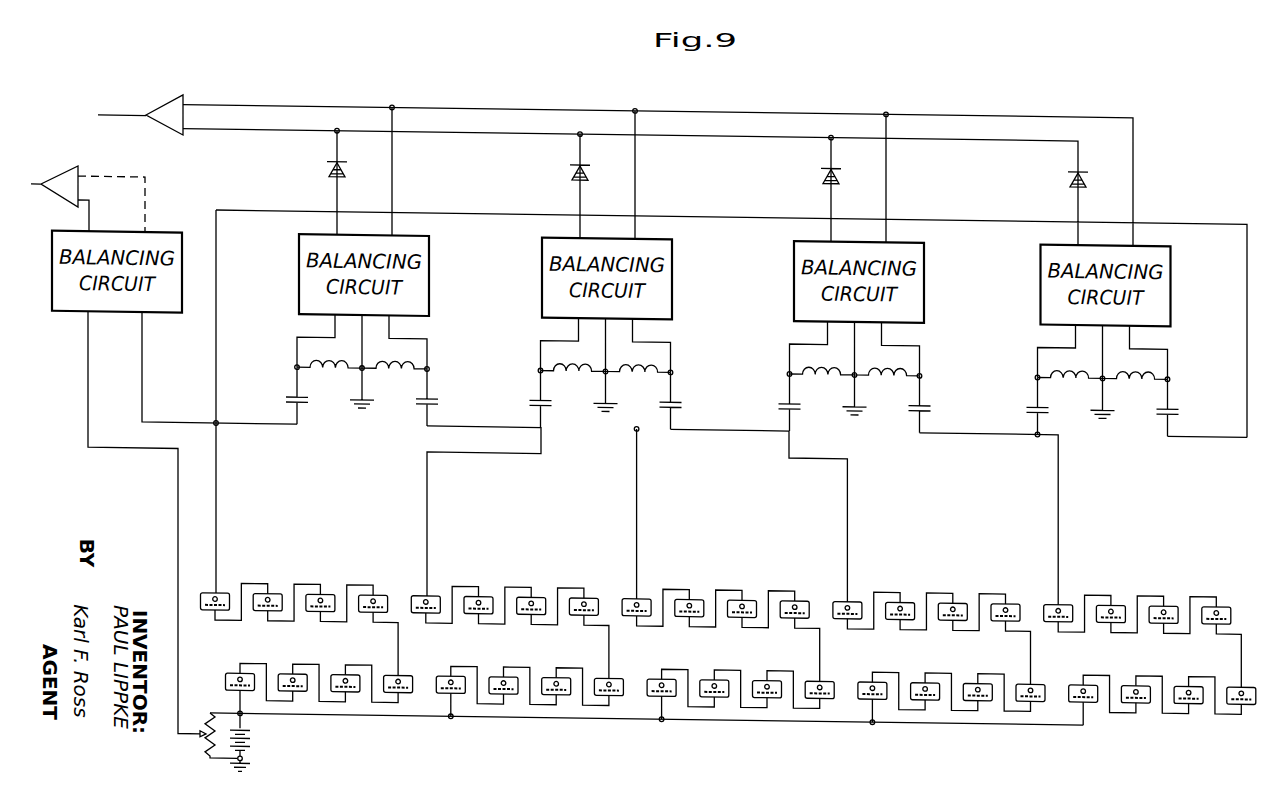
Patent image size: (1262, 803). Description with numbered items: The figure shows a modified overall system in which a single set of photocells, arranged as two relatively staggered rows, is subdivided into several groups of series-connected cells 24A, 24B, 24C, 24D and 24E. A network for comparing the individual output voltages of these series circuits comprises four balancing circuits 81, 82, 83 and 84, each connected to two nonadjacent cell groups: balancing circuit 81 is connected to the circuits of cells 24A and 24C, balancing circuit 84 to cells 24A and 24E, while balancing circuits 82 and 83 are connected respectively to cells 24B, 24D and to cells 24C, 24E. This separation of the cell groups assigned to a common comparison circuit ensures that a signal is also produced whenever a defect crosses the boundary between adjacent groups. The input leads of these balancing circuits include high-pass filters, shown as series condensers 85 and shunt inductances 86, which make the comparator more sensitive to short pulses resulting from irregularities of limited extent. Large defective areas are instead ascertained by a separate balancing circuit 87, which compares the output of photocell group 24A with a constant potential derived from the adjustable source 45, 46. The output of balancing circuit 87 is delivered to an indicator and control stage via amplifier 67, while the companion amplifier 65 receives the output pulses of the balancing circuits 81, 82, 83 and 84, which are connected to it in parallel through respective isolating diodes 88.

The amplifier 65 is at (172, 91).
The amplifier 67 is at (73, 164).
The balancing circuit 81 is at (431, 299).
The balancing circuit 82 is at (672, 299).
The balancing circuit 83 is at (925, 299).
The balancing circuit 84 is at (1172, 304).
The balancing circuit 87 is at (165, 313).
The isolating diode 88 is at (572, 162).
The series condenser 85 is at (300, 396).
The shunt inductance 86 is at (390, 373).
The group of series-connected cells 24A is at (298, 671).
The group of series-connected cells 24B is at (551, 667).
The group of series-connected cells 24C is at (708, 665).
The group of series-connected cells 24D is at (975, 674).
The group of series-connected cells 24E is at (1133, 671).
The adjustable source 45 is at (204, 750).
The adjustable source 46 is at (247, 728).